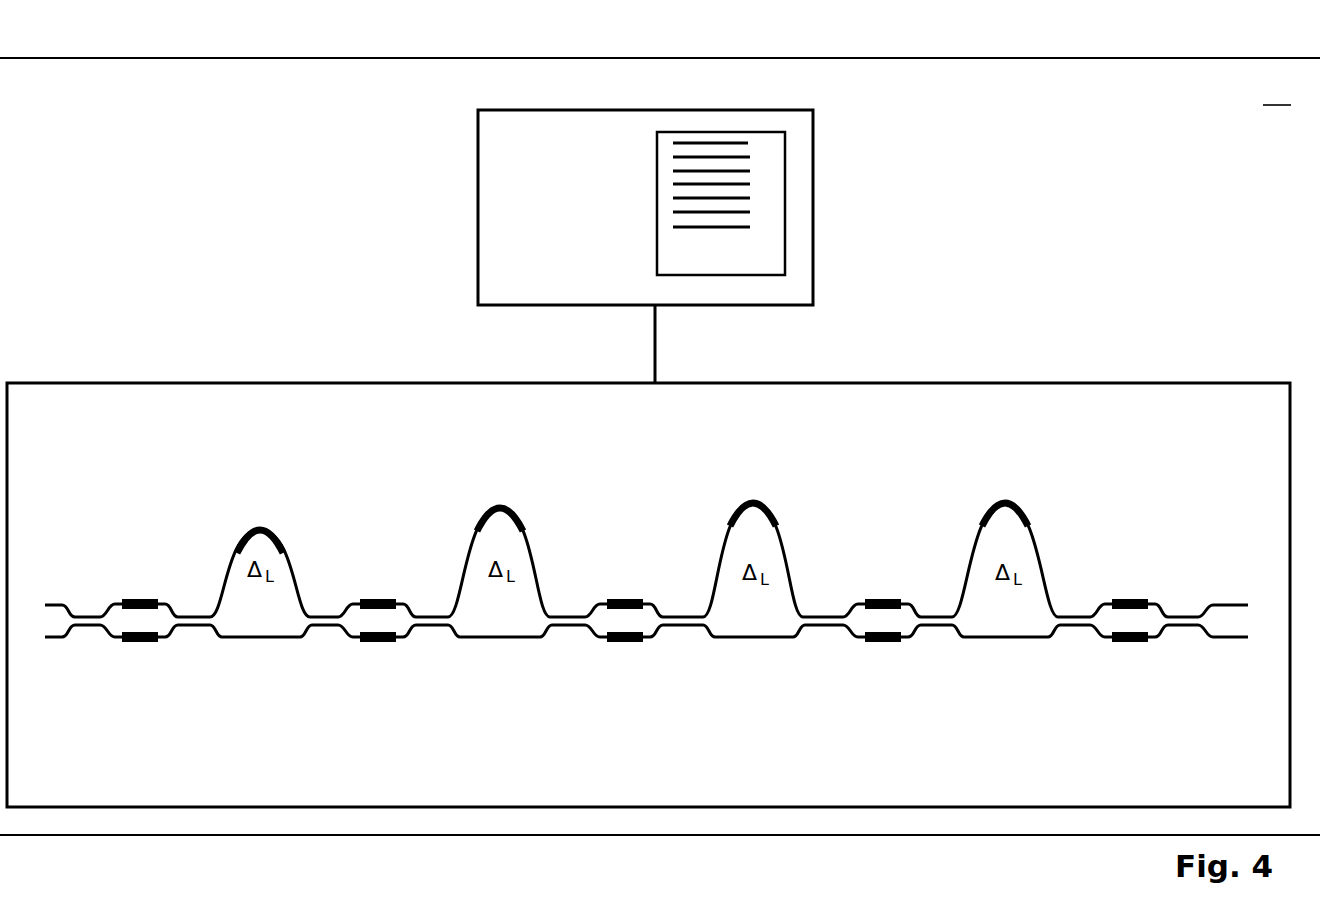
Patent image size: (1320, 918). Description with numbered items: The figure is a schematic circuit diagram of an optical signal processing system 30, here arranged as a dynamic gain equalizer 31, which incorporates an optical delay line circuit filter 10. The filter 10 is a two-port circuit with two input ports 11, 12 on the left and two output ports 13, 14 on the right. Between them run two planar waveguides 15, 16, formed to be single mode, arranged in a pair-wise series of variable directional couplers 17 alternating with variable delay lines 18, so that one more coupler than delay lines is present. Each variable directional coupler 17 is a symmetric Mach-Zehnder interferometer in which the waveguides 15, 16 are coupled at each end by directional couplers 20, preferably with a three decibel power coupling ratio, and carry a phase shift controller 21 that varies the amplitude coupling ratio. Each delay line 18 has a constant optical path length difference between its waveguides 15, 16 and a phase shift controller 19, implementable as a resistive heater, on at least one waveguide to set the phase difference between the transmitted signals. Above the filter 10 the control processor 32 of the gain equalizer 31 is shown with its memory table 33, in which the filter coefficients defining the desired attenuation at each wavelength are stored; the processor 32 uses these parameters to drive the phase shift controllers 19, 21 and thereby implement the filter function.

The optical delay line circuit filter 10 is at (1178, 383).
The input port 11 is at (55, 603).
The input port 12 is at (45, 640).
The output port 13 is at (1243, 605).
The output port 14 is at (1228, 640).
The planar waveguide 15 is at (233, 547).
The planar waveguide 16 is at (550, 670).
The variable directional coupler 17 is at (882, 570).
The variable delay line 18 is at (1009, 667).
The phase shift controller 19 is at (1022, 517).
The directional coupler 20 is at (1184, 602).
The phase shift controller 21 is at (1128, 670).
The optical signal processing system 30 is at (1156, 46).
The dynamic gain equalizer 31 is at (1277, 93).
The control processor 32 is at (813, 128).
The memory table 33 is at (785, 183).